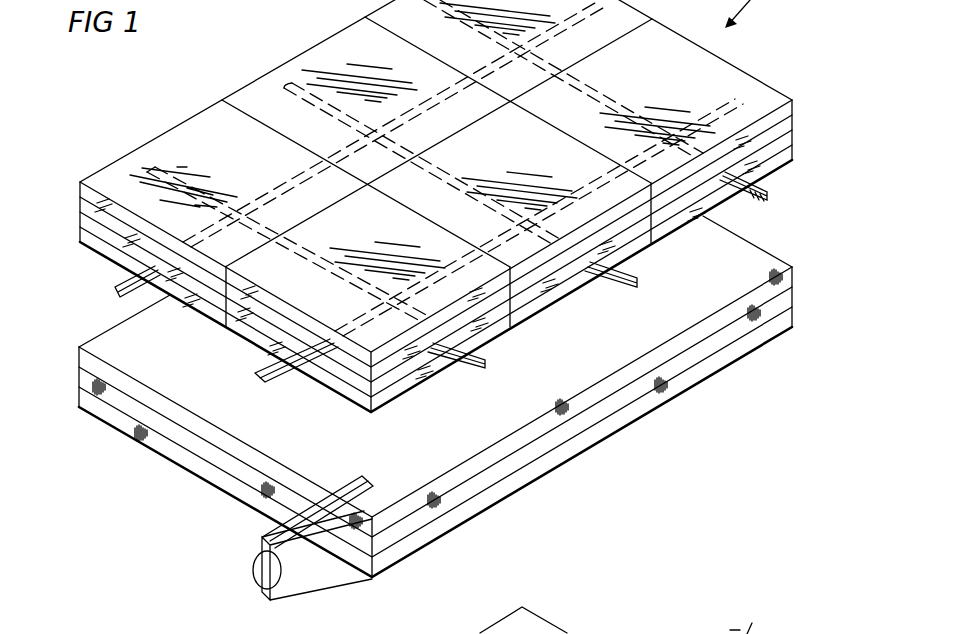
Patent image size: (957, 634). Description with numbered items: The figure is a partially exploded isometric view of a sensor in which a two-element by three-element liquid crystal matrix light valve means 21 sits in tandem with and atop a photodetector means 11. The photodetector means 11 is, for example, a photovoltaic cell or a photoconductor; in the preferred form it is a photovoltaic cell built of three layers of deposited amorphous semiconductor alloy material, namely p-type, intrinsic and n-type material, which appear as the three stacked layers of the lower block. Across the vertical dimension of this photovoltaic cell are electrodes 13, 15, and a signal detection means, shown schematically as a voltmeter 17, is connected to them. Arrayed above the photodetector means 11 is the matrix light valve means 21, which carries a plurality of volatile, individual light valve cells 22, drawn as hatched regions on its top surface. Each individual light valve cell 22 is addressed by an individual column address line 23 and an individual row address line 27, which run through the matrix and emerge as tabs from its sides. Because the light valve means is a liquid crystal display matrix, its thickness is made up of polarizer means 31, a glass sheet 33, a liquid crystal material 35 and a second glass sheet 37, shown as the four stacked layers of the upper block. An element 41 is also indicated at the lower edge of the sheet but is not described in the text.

The photodetector means 11 is at (73, 347).
The electrode 13 is at (277, 534).
The electrode 15 is at (297, 579).
The voltmeter 17 is at (253, 568).
The matrix light valve means 21 is at (451, 206).
The light valve cell 22 is at (138, 160).
The column address line 23 is at (476, 366).
The row address line 27 is at (115, 288).
The polarizer means 31 is at (436, 183).
The glass sheet 33 is at (436, 256).
The liquid crystal material 35 is at (436, 271).
The glass sheet 37 is at (73, 182).
The partial element at sheet bottom 41 is at (546, 633).